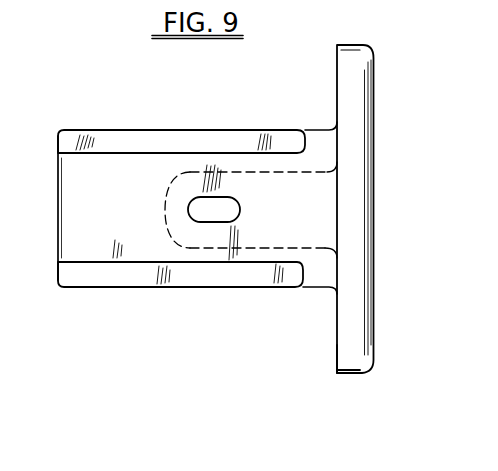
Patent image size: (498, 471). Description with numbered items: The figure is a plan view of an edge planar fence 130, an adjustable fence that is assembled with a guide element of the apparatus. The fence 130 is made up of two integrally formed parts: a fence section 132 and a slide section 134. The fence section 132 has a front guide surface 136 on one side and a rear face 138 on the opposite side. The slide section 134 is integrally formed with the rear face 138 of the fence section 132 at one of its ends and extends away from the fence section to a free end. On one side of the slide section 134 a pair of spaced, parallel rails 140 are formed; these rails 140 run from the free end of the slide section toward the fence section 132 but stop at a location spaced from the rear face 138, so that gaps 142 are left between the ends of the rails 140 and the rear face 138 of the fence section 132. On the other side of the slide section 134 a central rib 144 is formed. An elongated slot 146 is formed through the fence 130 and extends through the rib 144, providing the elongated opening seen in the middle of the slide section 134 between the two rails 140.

The edge planar fence 130 is at (200, 287).
The fence section 132 is at (356, 362).
The slide section 134 is at (88, 220).
The front guide surface 136 is at (374, 245).
The rear face 138 is at (337, 357).
The rails 140 is at (117, 143).
The gaps 142 is at (323, 148).
The central rib 144 is at (275, 198).
The elongated slot 146 is at (197, 200).